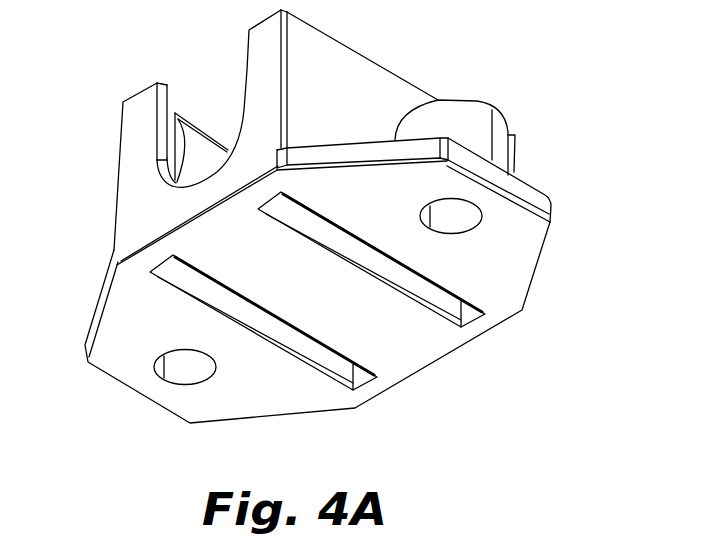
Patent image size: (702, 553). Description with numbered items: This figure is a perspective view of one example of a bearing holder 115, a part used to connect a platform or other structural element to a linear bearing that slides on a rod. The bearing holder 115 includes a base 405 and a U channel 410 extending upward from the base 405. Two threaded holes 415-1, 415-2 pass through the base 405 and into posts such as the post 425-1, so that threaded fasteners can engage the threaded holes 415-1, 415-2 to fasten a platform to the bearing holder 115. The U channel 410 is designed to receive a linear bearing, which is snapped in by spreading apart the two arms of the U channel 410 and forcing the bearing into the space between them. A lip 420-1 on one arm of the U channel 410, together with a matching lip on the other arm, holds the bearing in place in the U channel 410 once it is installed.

The bearing holder 115 is at (592, 72).
The base 405 is at (140, 288).
The U channel 410 is at (145, 142).
The threaded hole 415-1 is at (455, 217).
The threaded hole 415-2 is at (178, 368).
The lip 420-1 is at (199, 135).
The post 425-1 is at (450, 118).